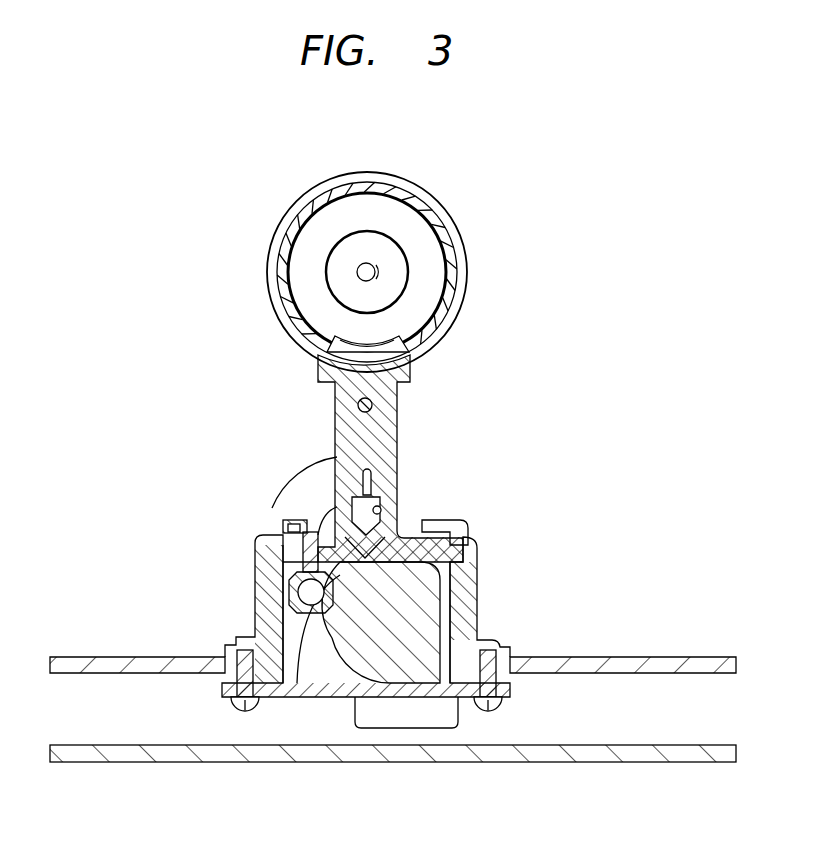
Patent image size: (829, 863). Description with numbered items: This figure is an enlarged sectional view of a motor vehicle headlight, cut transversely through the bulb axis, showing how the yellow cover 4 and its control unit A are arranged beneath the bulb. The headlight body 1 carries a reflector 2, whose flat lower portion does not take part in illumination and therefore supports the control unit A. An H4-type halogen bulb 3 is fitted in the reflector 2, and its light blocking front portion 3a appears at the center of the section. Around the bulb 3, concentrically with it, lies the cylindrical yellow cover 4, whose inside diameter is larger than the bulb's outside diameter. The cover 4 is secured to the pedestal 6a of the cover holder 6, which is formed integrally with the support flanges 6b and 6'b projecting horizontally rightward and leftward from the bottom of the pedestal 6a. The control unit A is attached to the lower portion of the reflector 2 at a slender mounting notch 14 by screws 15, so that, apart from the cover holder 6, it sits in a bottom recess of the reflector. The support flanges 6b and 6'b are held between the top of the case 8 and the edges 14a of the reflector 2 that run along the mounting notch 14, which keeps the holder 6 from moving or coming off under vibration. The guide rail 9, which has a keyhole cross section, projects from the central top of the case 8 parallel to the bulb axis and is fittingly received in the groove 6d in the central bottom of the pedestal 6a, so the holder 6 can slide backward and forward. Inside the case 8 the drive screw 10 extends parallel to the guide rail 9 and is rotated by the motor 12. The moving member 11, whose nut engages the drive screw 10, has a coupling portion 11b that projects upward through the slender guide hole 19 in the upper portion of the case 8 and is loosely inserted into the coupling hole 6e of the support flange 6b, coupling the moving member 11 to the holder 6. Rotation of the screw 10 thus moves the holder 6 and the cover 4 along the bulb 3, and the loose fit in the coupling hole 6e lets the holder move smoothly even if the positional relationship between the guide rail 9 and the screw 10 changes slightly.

The headlight body 1 is at (614, 762).
The reflector 2 is at (600, 657).
The halogen bulb 3 is at (418, 272).
The light blocking front portion 3a is at (372, 240).
The yellow cover 4 is at (447, 208).
The cover holder 6 is at (390, 458).
The pedestal 6a is at (385, 435).
The support flange 6'b is at (467, 552).
The guide rail 9 is at (362, 480).
The groove 6d is at (383, 510).
The case 8 is at (462, 607).
The moving member 11 is at (297, 683).
The coupling portion 11b is at (310, 530).
The motor 12 is at (408, 662).
The control unit A is at (372, 717).
The drive screw 10 is at (310, 612).
The guide hole 19 is at (280, 560).
The support flange 6b is at (283, 528).
The coupling hole 6e is at (292, 524).
The mounting notch 14 is at (425, 522).
The edges 14a is at (452, 522).
The screws 15 is at (500, 705).